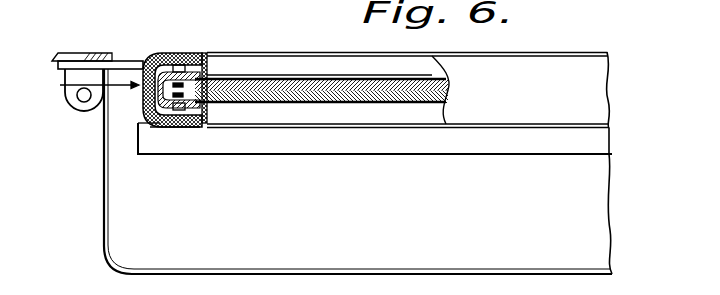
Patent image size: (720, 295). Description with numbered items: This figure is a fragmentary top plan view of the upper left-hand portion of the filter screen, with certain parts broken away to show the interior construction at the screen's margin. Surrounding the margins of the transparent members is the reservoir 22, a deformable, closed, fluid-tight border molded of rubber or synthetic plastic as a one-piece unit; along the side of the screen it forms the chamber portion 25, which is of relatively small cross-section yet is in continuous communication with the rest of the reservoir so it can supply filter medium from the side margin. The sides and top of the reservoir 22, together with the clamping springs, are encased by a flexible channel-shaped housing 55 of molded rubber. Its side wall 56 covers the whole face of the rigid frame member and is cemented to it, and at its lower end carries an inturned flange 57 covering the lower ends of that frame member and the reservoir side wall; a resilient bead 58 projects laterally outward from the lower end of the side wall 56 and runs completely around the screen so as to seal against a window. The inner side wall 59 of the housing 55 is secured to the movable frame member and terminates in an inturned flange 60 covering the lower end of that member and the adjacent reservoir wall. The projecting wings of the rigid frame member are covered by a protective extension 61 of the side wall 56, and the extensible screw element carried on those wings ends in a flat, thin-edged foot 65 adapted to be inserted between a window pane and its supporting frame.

The reservoir 22 is at (163, 98).
The chamber portion 25 is at (162, 91).
The flexible channel-shaped housing 55 is at (80, 85).
The side wall 56 is at (190, 41).
The inturned flange 57 is at (267, 63).
The resilient bead 58 is at (206, 56).
The inner side wall 59 is at (173, 130).
The inturned flange 60 is at (200, 115).
The protective extension 61 is at (123, 61).
The foot 65 is at (77, 44).